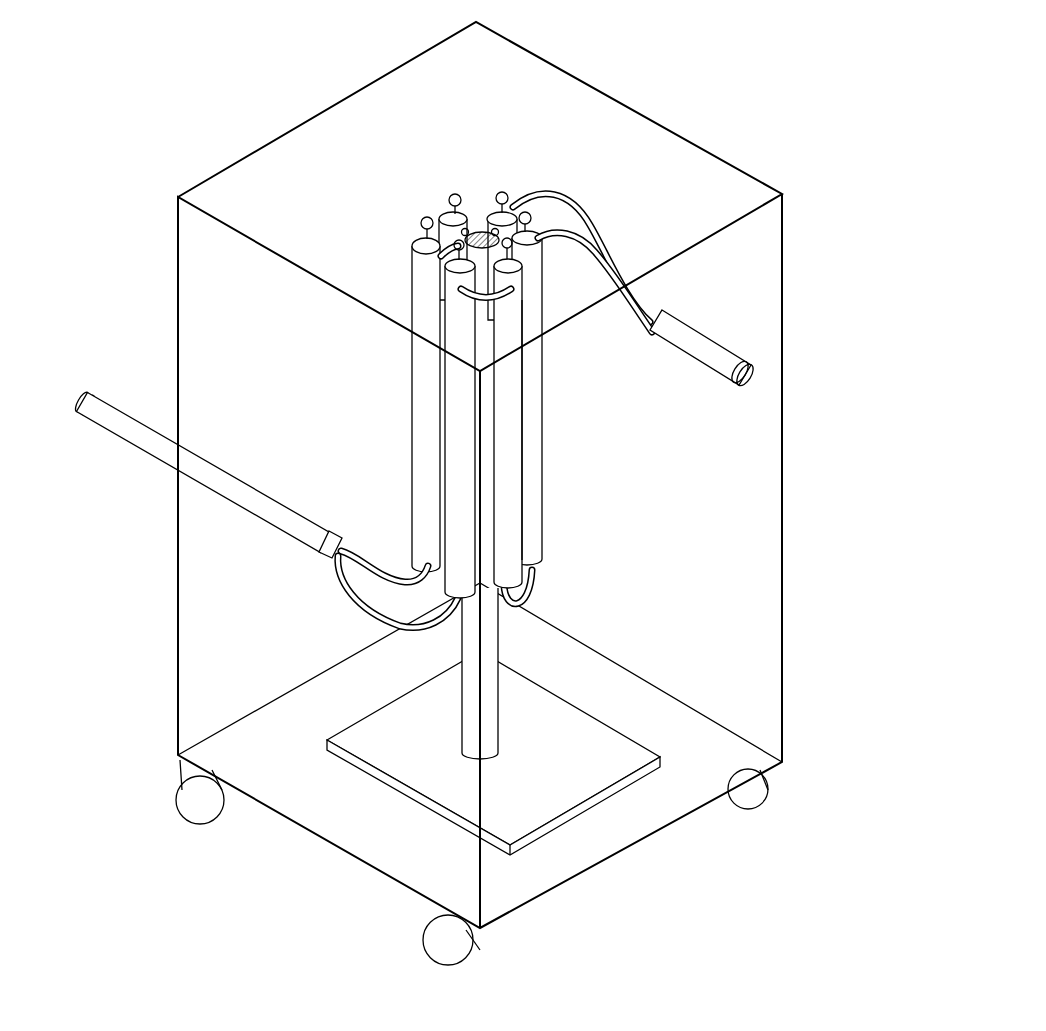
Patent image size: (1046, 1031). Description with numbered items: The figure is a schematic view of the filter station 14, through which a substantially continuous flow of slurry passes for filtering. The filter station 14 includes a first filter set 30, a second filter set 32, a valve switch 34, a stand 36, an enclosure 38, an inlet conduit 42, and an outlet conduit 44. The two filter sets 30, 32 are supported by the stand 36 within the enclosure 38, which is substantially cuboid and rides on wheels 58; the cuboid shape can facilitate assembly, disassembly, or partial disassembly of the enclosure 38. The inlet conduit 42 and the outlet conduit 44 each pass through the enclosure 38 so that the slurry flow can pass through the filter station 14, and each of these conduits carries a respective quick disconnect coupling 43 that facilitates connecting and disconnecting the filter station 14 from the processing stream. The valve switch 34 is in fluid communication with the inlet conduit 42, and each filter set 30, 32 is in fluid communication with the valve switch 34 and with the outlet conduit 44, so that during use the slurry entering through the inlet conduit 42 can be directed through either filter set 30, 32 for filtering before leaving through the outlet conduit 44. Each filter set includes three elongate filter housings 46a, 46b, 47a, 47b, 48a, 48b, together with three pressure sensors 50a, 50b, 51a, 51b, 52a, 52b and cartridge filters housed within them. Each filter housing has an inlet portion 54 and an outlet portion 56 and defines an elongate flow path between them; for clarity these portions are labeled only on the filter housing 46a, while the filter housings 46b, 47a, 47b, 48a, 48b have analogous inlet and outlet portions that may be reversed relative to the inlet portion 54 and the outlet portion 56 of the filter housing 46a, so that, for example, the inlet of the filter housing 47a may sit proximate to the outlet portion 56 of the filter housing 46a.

The filter station 14 is at (268, 82).
The first filter set 30 is at (388, 180).
The second filter set 32 is at (596, 408).
The valve switch 34 is at (333, 557).
The stand 36 is at (460, 728).
The enclosure 38 is at (578, 84).
The inlet conduit 42 is at (120, 402).
The quick disconnect coupling 43 is at (760, 384).
The outlet conduit 44 is at (454, 332).
The elongate filter housing 46a is at (386, 384).
The elongate filter housing 46b is at (457, 623).
The elongate filter housing 47a is at (445, 198).
The elongate filter housing 47b is at (549, 461).
The elongate filter housing 48a is at (585, 335).
The elongate filter housing 48b is at (547, 543).
The pressure sensor 50a is at (420, 223).
The pressure sensor 50b is at (412, 252).
The pressure sensor 51a is at (450, 195).
The pressure sensor 51b is at (540, 250).
The pressure sensor 52a is at (502, 191).
The pressure sensor 52b is at (534, 216).
The inlet portion 54 is at (410, 550).
The outlet portion 56 is at (410, 290).
The wheels 58 is at (420, 945).